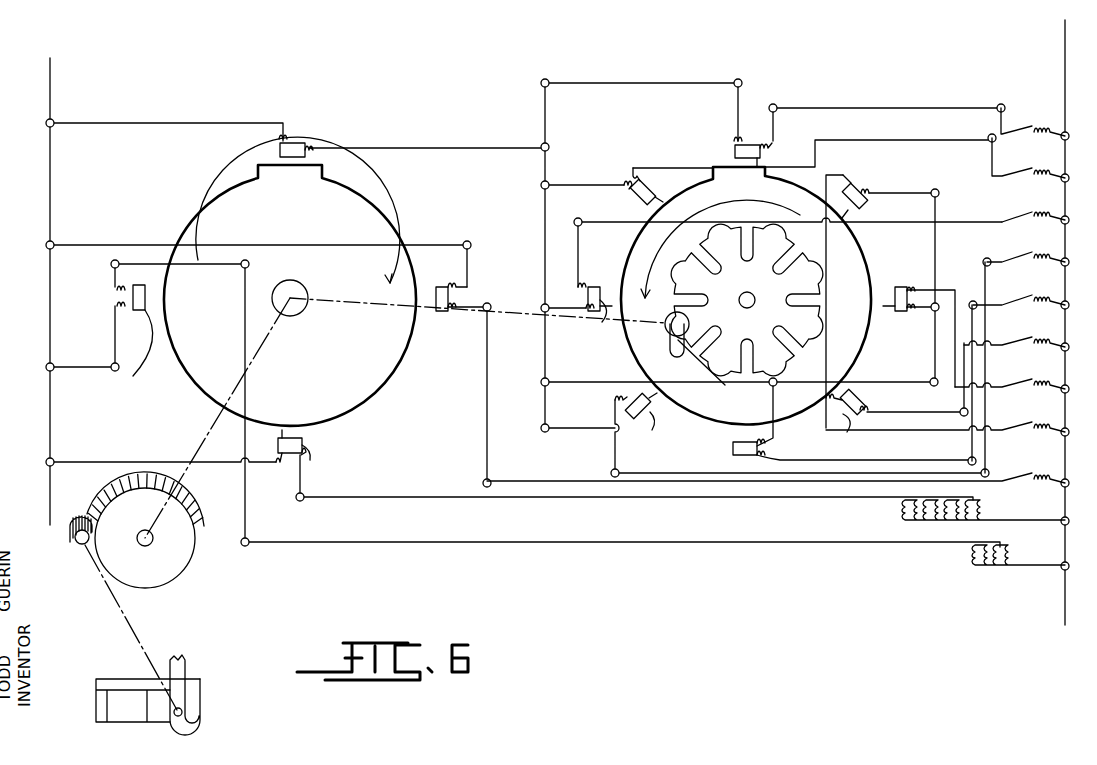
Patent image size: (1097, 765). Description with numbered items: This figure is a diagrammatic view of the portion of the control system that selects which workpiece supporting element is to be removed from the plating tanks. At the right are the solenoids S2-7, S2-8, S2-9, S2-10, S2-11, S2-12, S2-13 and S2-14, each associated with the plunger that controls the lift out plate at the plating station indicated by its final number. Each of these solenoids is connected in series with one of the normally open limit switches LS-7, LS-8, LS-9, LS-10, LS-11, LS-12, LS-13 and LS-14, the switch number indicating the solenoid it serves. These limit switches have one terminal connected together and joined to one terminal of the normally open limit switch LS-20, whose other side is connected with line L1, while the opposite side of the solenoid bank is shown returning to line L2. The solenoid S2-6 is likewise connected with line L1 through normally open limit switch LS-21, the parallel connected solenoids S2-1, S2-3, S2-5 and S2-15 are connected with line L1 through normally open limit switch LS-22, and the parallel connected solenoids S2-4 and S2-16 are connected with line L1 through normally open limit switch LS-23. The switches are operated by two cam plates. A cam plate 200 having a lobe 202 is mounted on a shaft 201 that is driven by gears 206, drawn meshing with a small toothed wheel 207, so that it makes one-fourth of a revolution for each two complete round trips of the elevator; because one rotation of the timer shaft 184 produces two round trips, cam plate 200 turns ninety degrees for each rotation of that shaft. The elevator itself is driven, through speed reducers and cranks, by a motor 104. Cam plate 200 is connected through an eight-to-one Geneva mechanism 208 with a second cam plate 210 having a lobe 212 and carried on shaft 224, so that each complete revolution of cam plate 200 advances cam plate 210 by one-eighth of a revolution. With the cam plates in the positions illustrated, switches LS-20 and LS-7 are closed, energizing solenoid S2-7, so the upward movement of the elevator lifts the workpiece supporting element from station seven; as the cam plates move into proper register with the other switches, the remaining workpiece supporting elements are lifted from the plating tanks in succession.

The line L1 is at (51, 282).
The power line L2 is at (1055, 322).
The motor 104 is at (125, 712).
The timer shaft 184 is at (532, 318).
The cam plate 200 is at (357, 211).
The shaft 201 is at (300, 292).
The lobe 202 is at (300, 168).
The gears 206 is at (175, 563).
The pinion 207 is at (76, 541).
The Geneva mechanism 208 is at (728, 345).
The second cam plate 210 is at (705, 195).
The lobe 212 is at (765, 167).
The shaft 224 is at (760, 313).
The limit switch LS-7 is at (736, 146).
The limit switch LS-8 is at (628, 195).
The limit switch LS-9 is at (602, 313).
The limit switch LS-10 is at (650, 412).
The limit switch LS-11 is at (763, 445).
The limit switch LS-12 is at (865, 387).
The limit switch LS-13 is at (899, 287).
The limit switch LS-14 is at (863, 188).
The limit switch LS-20 is at (280, 150).
The limit switch LS-21 is at (452, 293).
The limit switch LS-22 is at (313, 447).
The limit switch LS-23 is at (137, 342).
The solenoid S2-1 is at (903, 520).
The solenoid S2-3 is at (838, 557).
The solenoid S2-4 is at (1010, 558).
The solenoid S2-5 is at (838, 579).
The solenoid S2-6 is at (776, 372).
The solenoid S2-7 is at (1033, 115).
The solenoid S2-8 is at (1028, 158).
The solenoid S2-9 is at (1028, 206).
The solenoid S2-10 is at (1026, 249).
The solenoid S2-11 is at (1019, 291).
The solenoid S2-12 is at (1014, 334).
The solenoid S2-13 is at (1010, 375).
The solenoid S2-14 is at (945, 417).
The solenoid S2-15 is at (843, 601).
The solenoid S2-16 is at (988, 617).